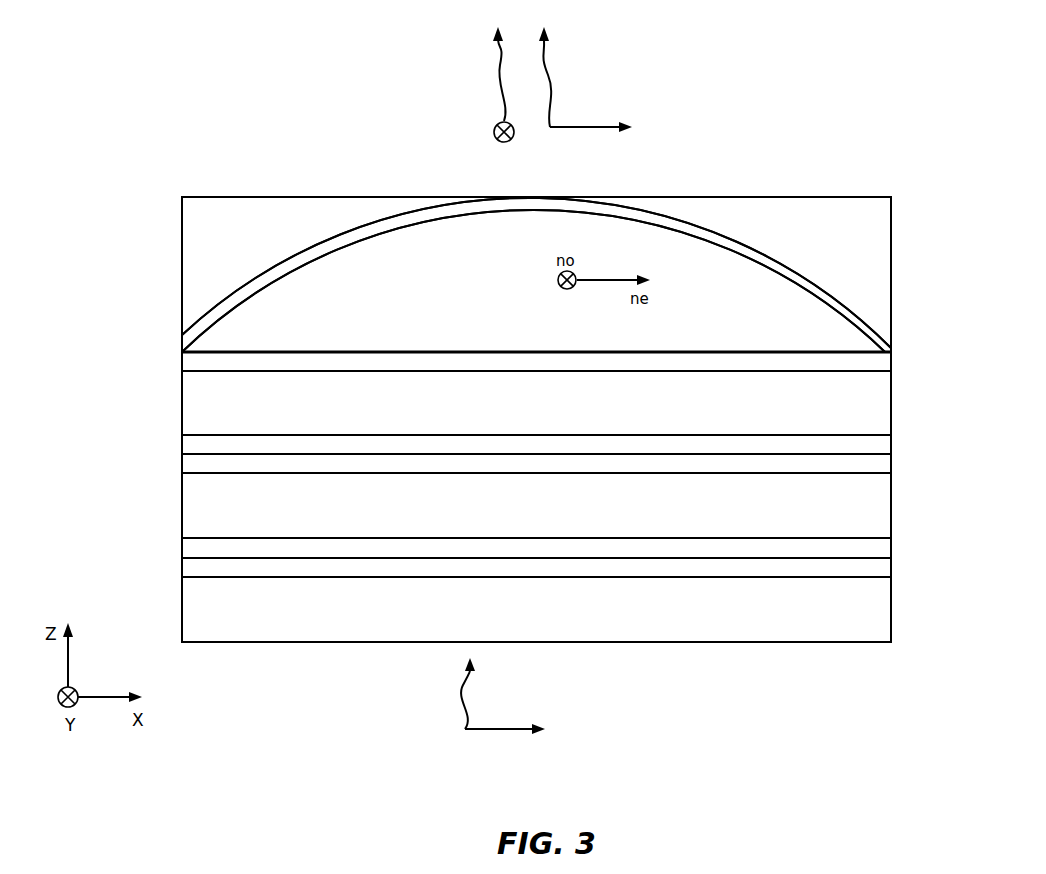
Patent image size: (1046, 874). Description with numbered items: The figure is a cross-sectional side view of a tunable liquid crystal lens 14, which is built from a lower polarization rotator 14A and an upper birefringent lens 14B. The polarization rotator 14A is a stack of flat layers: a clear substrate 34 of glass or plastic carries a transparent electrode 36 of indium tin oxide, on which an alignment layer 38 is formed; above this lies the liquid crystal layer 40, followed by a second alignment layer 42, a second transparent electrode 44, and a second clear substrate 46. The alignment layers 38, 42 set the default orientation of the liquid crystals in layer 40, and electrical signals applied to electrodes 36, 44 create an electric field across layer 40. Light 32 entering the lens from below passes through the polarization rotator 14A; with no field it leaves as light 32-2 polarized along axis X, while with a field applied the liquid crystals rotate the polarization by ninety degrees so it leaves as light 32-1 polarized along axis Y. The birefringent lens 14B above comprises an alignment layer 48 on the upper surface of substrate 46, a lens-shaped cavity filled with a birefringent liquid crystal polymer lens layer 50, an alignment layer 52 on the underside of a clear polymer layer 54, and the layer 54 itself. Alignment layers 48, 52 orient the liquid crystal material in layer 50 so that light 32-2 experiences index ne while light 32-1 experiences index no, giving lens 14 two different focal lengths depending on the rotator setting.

The lens 14 is at (870, 90).
The polarization rotator 14A is at (158, 373).
The birefringent lens 14B is at (158, 197).
The light 32 is at (458, 695).
The light 32-1 is at (498, 58).
The light 32-2 is at (550, 58).
The substrate 34 is at (878, 606).
The electrode 36 is at (878, 568).
The alignment layer 38 is at (878, 549).
The liquid crystal layer 40 is at (878, 503).
The alignment layer 42 is at (878, 465).
The electrode 44 is at (878, 443).
The substrate 46 is at (878, 398).
The alignment layer 48 is at (757, 360).
The lens layer 50 is at (843, 332).
The alignment layer 52 is at (843, 305).
The layer 54 is at (878, 230).